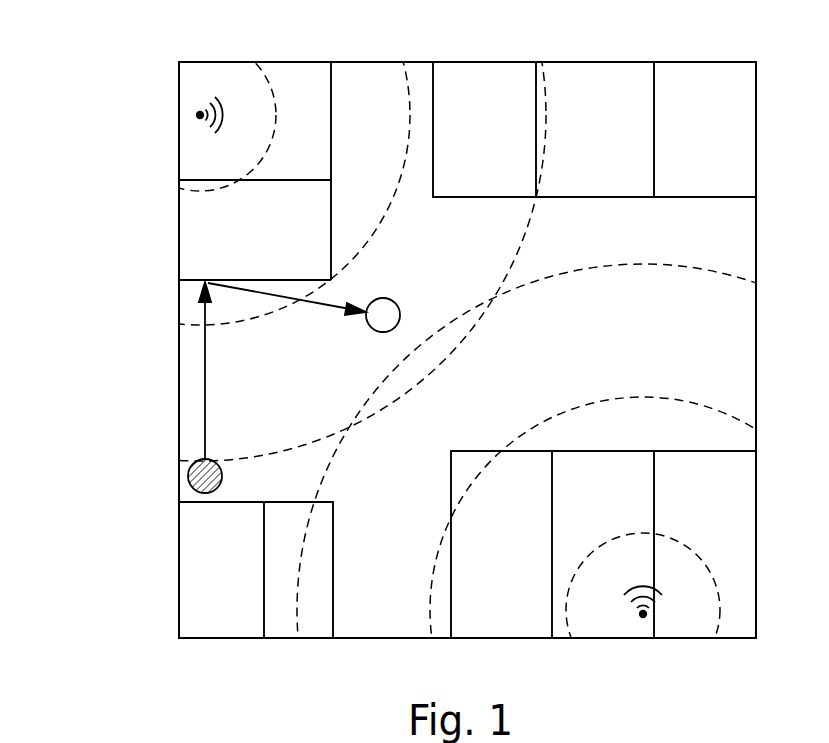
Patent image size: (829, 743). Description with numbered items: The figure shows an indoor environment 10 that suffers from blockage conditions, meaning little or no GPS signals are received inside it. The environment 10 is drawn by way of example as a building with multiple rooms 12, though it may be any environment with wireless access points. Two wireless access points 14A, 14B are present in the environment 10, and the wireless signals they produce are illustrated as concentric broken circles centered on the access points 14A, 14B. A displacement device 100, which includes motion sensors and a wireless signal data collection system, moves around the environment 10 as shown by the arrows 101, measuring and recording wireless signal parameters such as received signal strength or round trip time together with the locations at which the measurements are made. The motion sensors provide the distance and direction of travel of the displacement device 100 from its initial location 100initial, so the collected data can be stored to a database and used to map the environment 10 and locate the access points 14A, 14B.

The indoor environment 10 is at (180, 45).
The rooms 12 is at (570, 198).
The wireless access point 14A is at (197, 115).
The wireless access point 14B is at (643, 614).
The initial location 100initial is at (188, 476).
The displacement device 100 is at (386, 298).
The arrows 101 is at (252, 292).